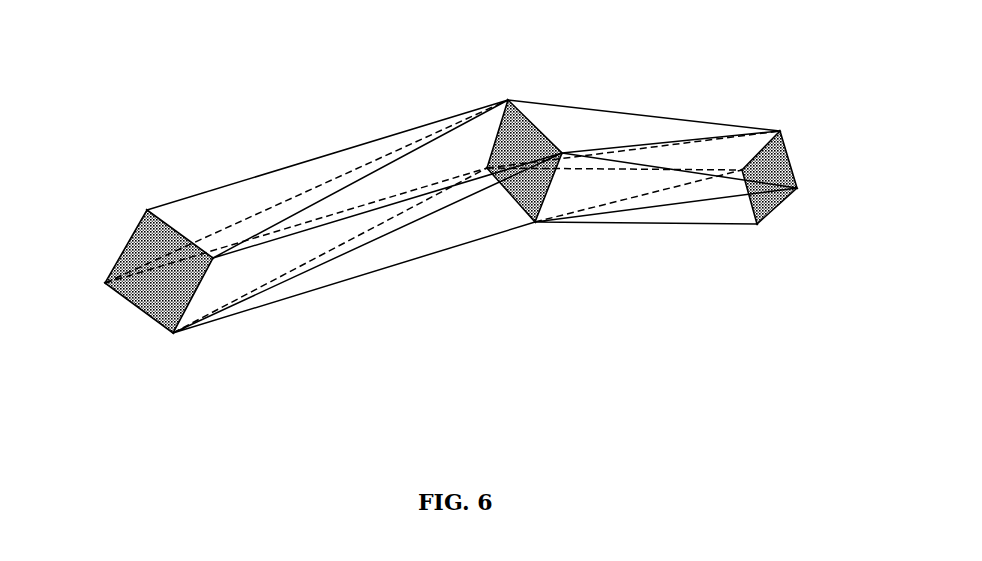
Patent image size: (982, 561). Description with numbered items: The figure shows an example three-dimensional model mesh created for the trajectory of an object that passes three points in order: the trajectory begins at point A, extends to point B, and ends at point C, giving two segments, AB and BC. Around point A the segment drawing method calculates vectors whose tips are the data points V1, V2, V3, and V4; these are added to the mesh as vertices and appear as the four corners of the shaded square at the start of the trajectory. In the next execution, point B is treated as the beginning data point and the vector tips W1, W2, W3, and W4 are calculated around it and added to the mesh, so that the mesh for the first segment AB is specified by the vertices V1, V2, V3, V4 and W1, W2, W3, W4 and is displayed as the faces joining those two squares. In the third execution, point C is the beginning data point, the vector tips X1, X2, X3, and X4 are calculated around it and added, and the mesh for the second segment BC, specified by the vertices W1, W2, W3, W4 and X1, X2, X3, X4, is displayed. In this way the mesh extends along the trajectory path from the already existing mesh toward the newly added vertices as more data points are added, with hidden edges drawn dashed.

The point A is at (152, 277).
The point B is at (530, 163).
The point C is at (780, 183).
The data point V1 is at (215, 262).
The data point V2 is at (173, 336).
The data point V3 is at (103, 280).
The data point V4 is at (147, 208).
The data point W1 is at (563, 151).
The data point W2 is at (538, 228).
The data point W3 is at (486, 165).
The data point W4 is at (510, 96).
The data point X1 is at (800, 188).
The data point X2 is at (758, 230).
The data point X3 is at (740, 168).
The data point X4 is at (780, 130).